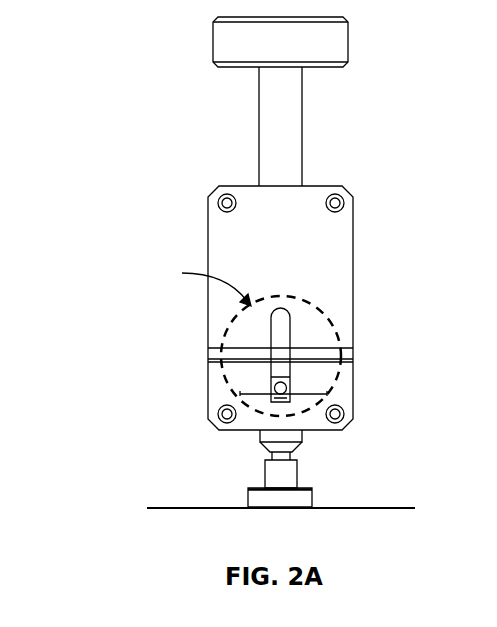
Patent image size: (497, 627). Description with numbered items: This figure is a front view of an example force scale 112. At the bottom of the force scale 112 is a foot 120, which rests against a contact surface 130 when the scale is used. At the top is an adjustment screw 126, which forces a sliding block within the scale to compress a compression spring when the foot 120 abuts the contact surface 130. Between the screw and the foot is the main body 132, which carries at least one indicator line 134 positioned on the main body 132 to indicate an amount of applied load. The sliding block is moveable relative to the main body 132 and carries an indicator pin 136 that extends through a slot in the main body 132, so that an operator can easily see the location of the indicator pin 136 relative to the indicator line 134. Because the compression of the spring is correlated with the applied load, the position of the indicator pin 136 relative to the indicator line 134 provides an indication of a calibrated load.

The force scale 112 is at (118, 113).
The adjustment screw 126 is at (258, 108).
The main body 132 is at (225, 237).
The indicator line 134 is at (241, 346).
The indicator pin 136 is at (272, 388).
The foot 120 is at (313, 497).
The contact surface 130 is at (271, 510).